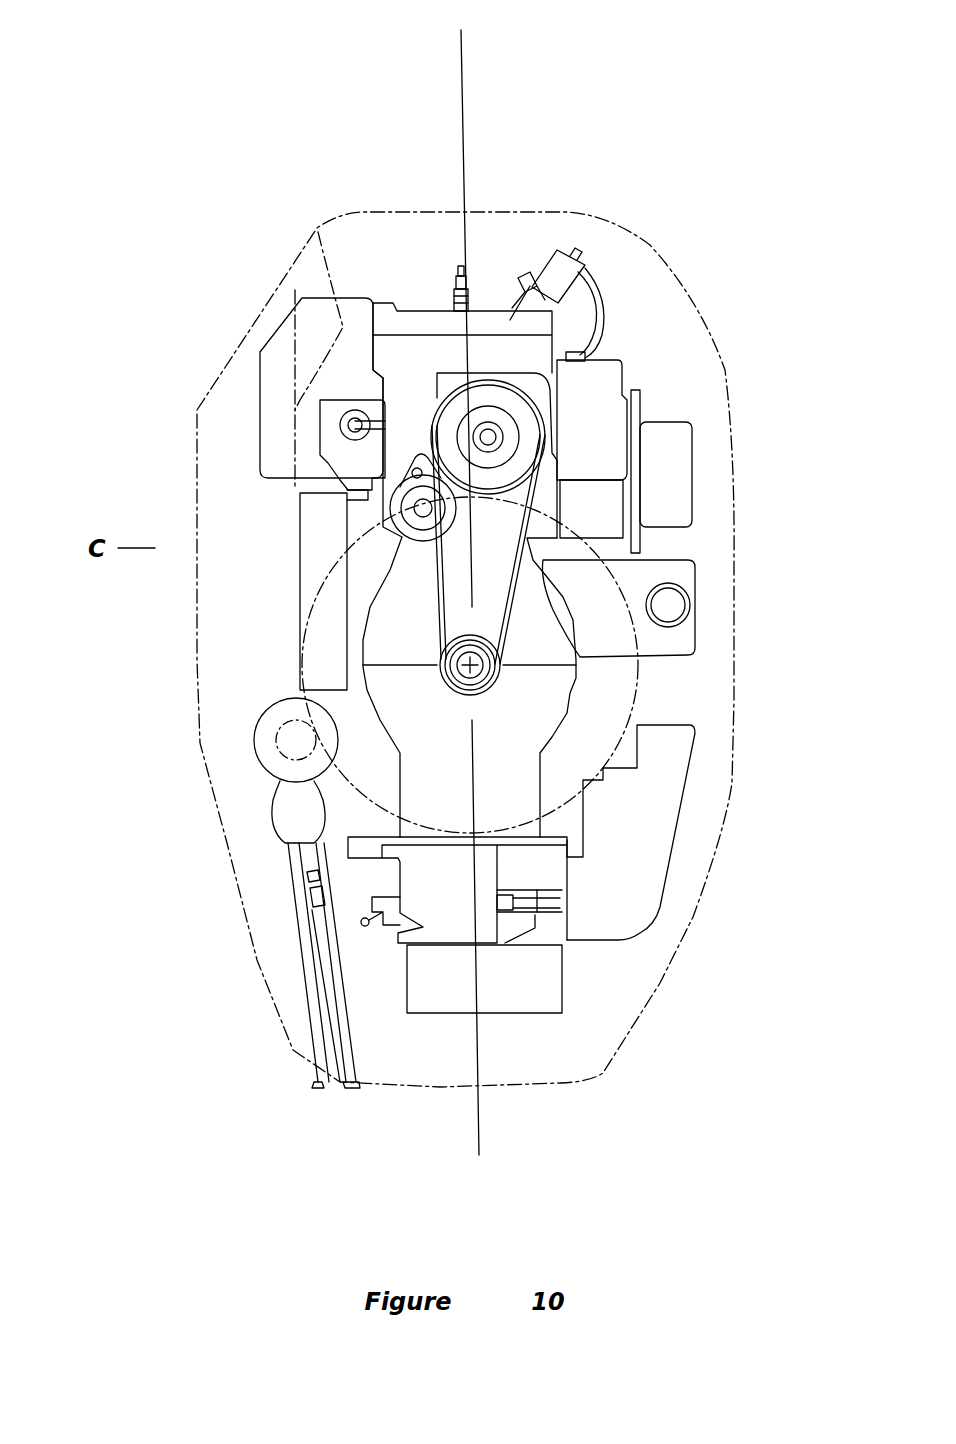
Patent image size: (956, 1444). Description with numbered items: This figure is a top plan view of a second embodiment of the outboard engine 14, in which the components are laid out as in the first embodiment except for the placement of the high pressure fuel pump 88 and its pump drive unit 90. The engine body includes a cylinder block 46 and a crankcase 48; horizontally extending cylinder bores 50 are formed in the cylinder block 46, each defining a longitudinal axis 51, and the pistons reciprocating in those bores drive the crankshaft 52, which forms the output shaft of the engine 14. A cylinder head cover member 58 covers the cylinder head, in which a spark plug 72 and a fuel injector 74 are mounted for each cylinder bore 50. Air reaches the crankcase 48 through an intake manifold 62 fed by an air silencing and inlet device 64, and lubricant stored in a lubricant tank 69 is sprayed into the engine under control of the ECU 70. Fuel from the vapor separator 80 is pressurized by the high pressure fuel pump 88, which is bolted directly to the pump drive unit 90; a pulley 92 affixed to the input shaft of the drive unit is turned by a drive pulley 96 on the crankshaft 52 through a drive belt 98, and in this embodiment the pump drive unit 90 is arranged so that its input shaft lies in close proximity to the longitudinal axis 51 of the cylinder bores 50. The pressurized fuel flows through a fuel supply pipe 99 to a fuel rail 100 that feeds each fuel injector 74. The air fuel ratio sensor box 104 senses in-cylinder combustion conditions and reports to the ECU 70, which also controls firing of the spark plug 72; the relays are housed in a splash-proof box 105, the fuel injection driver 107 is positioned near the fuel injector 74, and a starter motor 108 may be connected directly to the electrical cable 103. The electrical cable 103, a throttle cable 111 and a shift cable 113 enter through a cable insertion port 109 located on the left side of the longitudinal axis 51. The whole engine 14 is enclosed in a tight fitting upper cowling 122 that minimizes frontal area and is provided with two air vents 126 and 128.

The engine 14 is at (630, 315).
The cylinder block 46 is at (403, 608).
The crankcase 48 is at (560, 700).
The cylinder bore 50 is at (447, 343).
The longitudinal axis 51 is at (461, 43).
The crankshaft 52 is at (467, 678).
The cylinder head cover member 58 is at (427, 307).
The intake manifold 62 is at (467, 867).
The air silencing and inlet device 64 is at (452, 1000).
The lubricant tank 69 is at (692, 575).
The ECU 70 is at (300, 615).
The spark plug 72 is at (480, 275).
The fuel injector 74 is at (518, 270).
The vapor separator 80 is at (663, 825).
The high pressure fuel pump 88 is at (630, 385).
The pump drive unit 90 is at (600, 387).
The pulley 92 is at (532, 437).
The drive pulley 96 is at (508, 640).
The drive belt 98 is at (437, 623).
The fuel supply pipe 99 is at (607, 347).
The fuel rail 100 is at (560, 252).
The electrical cable 103 is at (300, 944).
The air fuel ratio sensor box 104 is at (340, 424).
The splash-proof box 105 is at (287, 310).
The fuel injection driver 107 is at (560, 463).
The starter motor 108 is at (260, 718).
The cable insertion port 109 is at (335, 1070).
The throttle cable 111 is at (324, 1015).
The shift cable 113 is at (343, 973).
The upper cowling 122 is at (732, 753).
The air vent 126 is at (318, 232).
The air vent 128 is at (690, 312).